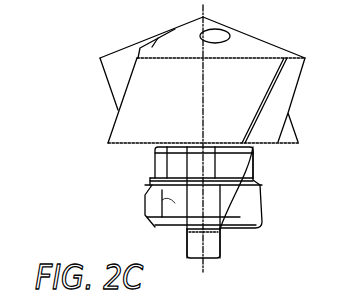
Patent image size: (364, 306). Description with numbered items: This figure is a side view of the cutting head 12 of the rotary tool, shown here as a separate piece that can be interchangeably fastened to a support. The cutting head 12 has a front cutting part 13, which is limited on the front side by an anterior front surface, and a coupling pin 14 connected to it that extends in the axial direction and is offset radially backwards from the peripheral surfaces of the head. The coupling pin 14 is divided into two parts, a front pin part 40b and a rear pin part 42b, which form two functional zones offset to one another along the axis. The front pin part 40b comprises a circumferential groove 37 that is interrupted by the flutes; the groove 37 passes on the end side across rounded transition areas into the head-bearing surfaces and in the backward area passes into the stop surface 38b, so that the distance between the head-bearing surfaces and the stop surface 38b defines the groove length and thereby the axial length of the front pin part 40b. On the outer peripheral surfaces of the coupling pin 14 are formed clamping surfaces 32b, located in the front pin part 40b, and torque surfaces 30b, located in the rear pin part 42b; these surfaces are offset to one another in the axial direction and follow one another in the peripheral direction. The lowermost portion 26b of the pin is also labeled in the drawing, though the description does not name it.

The cutting head 12 is at (184, 136).
The cutting part 13 is at (250, 95).
The coupling pin 14 is at (173, 205).
The stem 26b is at (211, 243).
The torque surface 30b is at (144, 207).
The clamping surface 32b is at (222, 166).
The circumferential groove 37 is at (135, 198).
The stop surface 38b is at (150, 181).
The front pin part 40b is at (156, 160).
The rear pin part 42b is at (175, 203).